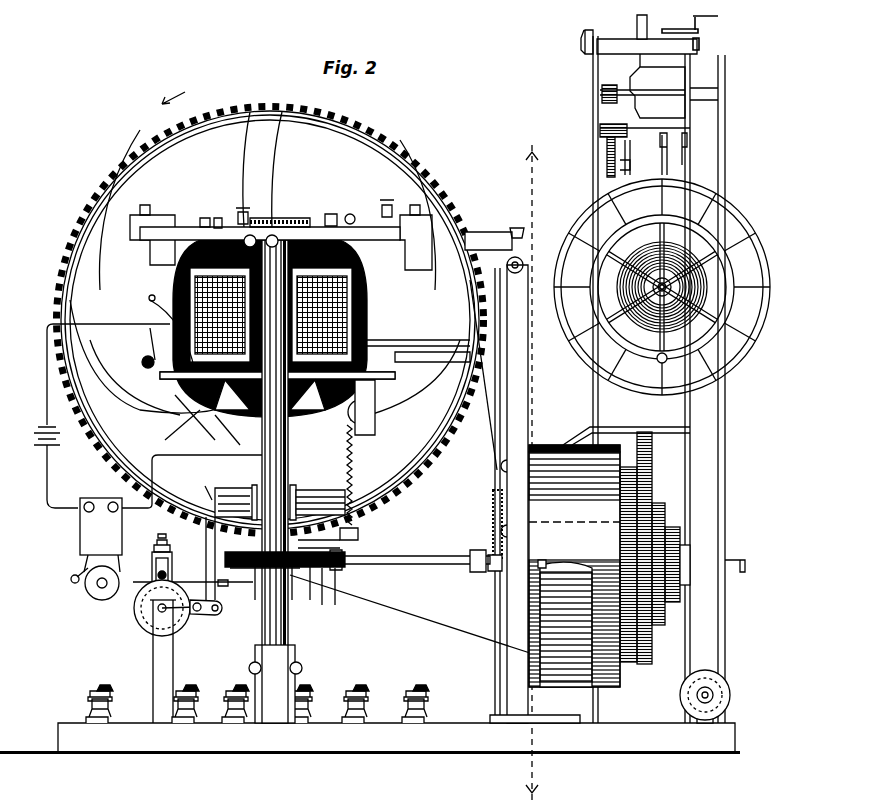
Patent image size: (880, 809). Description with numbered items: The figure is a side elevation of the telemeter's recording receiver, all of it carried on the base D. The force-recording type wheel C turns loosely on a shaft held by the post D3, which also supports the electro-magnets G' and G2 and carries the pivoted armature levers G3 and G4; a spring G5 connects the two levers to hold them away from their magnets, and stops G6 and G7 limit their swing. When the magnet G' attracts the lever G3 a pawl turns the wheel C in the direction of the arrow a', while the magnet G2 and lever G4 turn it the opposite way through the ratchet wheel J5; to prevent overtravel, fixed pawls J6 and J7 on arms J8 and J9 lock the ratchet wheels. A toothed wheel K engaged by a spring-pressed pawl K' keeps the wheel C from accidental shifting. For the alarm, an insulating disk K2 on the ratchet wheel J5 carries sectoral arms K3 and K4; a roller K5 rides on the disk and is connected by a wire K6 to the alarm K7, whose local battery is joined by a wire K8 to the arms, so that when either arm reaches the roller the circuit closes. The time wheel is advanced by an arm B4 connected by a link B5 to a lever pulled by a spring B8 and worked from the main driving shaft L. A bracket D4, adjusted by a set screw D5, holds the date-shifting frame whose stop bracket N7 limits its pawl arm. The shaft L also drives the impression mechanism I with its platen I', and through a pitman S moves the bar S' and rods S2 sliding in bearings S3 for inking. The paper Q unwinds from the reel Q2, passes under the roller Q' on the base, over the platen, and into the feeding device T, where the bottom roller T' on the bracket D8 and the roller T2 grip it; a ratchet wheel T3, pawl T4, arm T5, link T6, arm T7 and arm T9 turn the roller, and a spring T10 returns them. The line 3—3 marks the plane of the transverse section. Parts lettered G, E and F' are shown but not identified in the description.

The section line 3— 3 is at (537, 465).
The type wheel C is at (238, 106).
The arrow a' is at (175, 87).
The armature body G is at (265, 266).
The electro-magnet G2 is at (360, 318).
The post D3 is at (262, 484).
The stop G6 is at (142, 216).
The stop G7 is at (412, 214).
The armature lever G3 is at (205, 218).
The spring G5 is at (302, 218).
The armature lever G4 is at (388, 204).
The arm J8 is at (216, 218).
The pawl J6 is at (242, 212).
The pawl J7 is at (332, 214).
The arm J9 is at (352, 214).
The ratchet wheel J5 is at (186, 384).
The stop bracket N7 is at (478, 232).
The set screw D5 is at (524, 250).
The bracket D4 is at (530, 412).
The link B5 is at (494, 462).
The spring B8 is at (492, 536).
The arm B4 is at (452, 342).
The sectoral arm K4 is at (404, 360).
The roller K5 is at (376, 412).
The spring T10 is at (356, 470).
The arm T9 is at (356, 505).
The main driving shaft L is at (440, 562).
The pitman S is at (285, 569).
The rods S2 is at (248, 584).
The platen I' is at (231, 592).
The impression mechanism I is at (280, 588).
The bearings S3 is at (312, 600).
The bar S' is at (337, 600).
The paper Q is at (410, 614).
The wire K8 is at (47, 388).
The alarm K7 is at (82, 536).
The wire K6 is at (200, 470).
The electro-magnet G' is at (156, 328).
The spring-pressed pawl K' is at (135, 348).
The sectoral arm K3 is at (185, 420).
The toothed wheel K is at (179, 427).
The insulating disk K2 is at (228, 435).
The arm T7 is at (214, 500).
The roller T2 is at (150, 566).
The link T6 is at (195, 548).
The spring-pressed pawl T4 is at (205, 580).
The feeding device T is at (147, 609).
The ratchet wheel T3 is at (150, 636).
The roller T' is at (182, 625).
The arm T5 is at (222, 618).
The bracket D8 is at (163, 668).
The base D is at (208, 753).
The frame F' is at (669, 369).
The reel Q2 is at (750, 338).
The motor E is at (609, 559).
The roller Q' is at (721, 696).